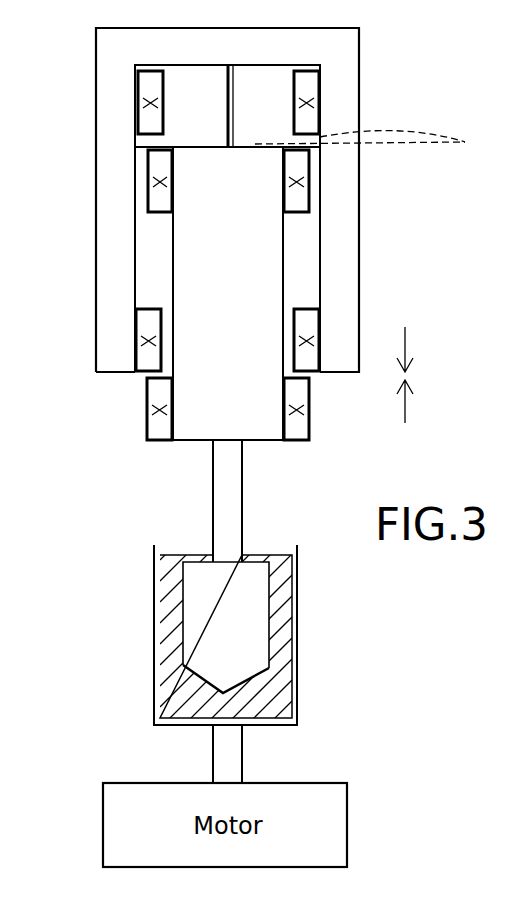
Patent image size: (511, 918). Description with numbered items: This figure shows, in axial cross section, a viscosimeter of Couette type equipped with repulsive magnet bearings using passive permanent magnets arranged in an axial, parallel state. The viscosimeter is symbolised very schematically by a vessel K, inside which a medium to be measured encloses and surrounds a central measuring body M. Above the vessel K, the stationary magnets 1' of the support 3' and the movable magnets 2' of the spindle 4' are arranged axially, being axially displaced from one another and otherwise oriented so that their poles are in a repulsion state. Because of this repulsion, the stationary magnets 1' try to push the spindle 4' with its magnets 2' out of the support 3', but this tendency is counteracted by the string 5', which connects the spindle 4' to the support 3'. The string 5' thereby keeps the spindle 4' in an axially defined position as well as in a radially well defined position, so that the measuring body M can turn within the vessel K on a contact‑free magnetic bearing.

The magnets of the support 1' is at (227, 221).
The magnets of the spindle 2' is at (209, 300).
The support 3' is at (246, 200).
The spindle 4' is at (243, 293).
The string 5' is at (251, 106).
The vessel K is at (297, 660).
The measuring body M is at (226, 627).